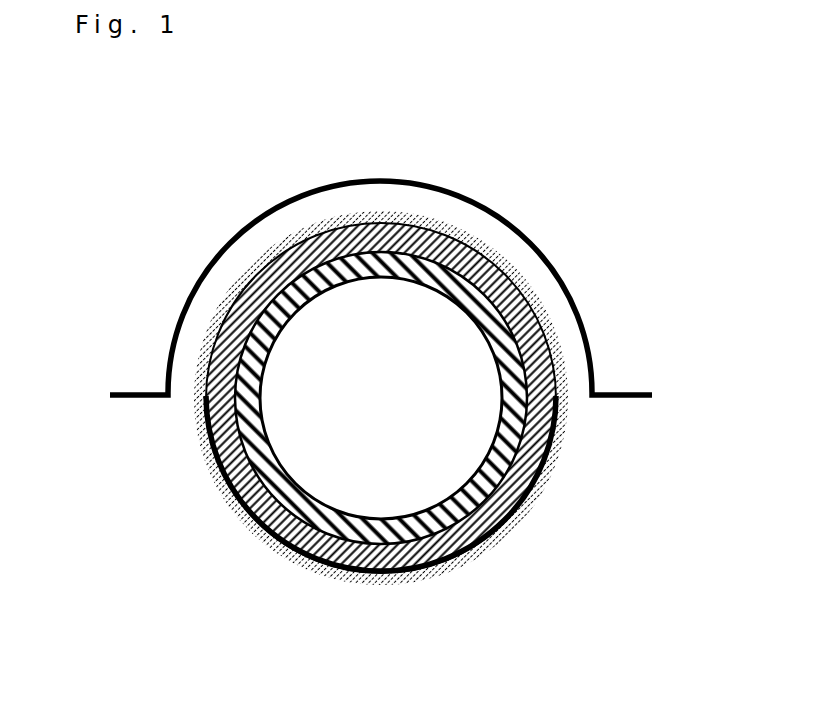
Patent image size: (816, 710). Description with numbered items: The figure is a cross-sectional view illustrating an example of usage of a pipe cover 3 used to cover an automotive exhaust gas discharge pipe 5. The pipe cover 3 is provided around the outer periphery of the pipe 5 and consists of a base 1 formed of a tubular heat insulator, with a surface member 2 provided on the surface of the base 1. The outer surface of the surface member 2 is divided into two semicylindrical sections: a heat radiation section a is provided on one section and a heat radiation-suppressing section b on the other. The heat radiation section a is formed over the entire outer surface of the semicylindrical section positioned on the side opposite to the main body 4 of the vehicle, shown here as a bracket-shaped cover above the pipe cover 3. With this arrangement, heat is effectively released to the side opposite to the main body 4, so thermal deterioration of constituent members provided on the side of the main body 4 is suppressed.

The base 1 is at (447, 545).
The surface member 2 is at (272, 542).
The pipe cover 3 is at (398, 437).
The main body 4 is at (513, 220).
The pipe 5 is at (267, 465).
The heat radiation section a is at (532, 505).
The heat radiation-suppressing section b is at (545, 313).